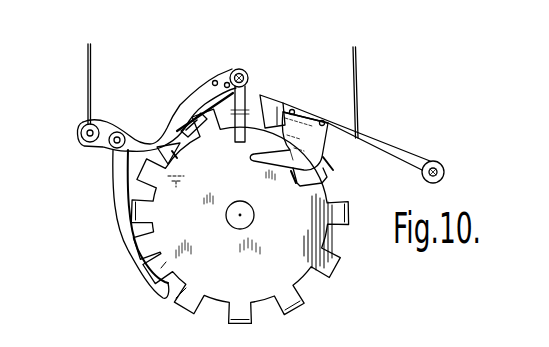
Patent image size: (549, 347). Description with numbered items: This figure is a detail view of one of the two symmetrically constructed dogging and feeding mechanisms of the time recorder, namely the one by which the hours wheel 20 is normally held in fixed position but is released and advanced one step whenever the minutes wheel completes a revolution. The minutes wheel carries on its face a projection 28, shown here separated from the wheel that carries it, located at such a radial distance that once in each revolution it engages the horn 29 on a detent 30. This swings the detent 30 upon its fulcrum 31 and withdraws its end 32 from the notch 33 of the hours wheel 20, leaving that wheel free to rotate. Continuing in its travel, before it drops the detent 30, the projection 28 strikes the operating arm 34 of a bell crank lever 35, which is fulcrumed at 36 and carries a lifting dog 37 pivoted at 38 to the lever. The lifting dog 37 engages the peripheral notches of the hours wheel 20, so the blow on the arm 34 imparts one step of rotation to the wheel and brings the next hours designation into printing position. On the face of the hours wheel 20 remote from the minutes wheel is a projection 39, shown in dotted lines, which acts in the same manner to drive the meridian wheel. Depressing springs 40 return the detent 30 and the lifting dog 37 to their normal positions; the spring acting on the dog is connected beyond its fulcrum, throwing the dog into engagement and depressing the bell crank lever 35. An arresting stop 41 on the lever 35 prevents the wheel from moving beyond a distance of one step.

The hours wheel 20 is at (239, 216).
The projection 28 is at (332, 184).
The horn 29 is at (278, 155).
The detent 30 is at (380, 143).
The fulcrum 31 is at (441, 166).
The end of detent 32 is at (270, 100).
The notch 33 is at (253, 118).
The operating arm 34 is at (237, 135).
The bell crank lever 35 is at (180, 108).
The fulcrum 36 is at (237, 70).
The lifting dog 37 is at (150, 292).
The pivot 38 is at (115, 132).
The projection 39 is at (175, 196).
The depressing springs 40 is at (85, 77).
The arresting stop 41 is at (202, 122).